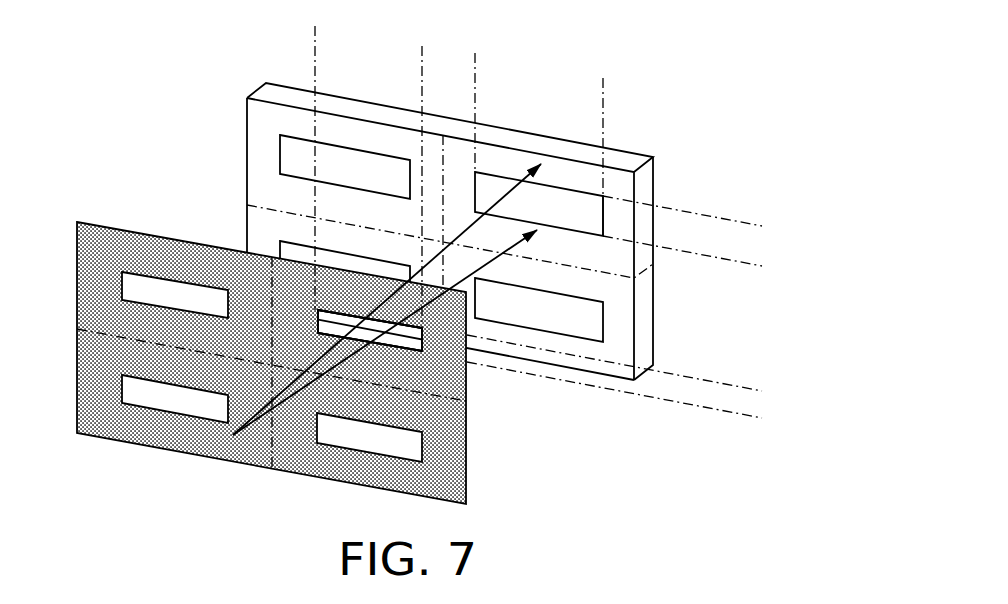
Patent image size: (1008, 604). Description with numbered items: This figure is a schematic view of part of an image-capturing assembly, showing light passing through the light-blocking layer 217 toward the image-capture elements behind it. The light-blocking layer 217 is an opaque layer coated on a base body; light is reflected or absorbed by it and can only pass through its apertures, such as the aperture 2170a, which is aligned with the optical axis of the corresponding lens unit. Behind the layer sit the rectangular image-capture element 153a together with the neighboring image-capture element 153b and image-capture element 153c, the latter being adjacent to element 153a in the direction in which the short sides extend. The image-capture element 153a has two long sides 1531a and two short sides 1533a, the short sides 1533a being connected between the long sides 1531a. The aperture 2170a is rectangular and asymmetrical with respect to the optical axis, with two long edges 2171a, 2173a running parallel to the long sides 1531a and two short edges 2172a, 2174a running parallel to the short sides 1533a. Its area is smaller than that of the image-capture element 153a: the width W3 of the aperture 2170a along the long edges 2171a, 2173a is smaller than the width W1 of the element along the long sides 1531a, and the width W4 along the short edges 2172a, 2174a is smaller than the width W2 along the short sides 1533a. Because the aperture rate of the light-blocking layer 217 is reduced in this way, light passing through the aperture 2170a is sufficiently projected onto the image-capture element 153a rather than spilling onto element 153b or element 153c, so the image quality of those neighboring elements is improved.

The image-capture element 153a is at (562, 205).
The image-capture element 153b is at (380, 172).
The image-capture element 153c is at (582, 317).
The long sides 1531a is at (580, 230).
The short sides 1533a is at (438, 193).
The light-blocking layer 217 is at (440, 480).
The aperture 2170a is at (412, 355).
The long edge 2171a is at (343, 310).
The short edge 2172a is at (423, 351).
The long edge 2173a is at (377, 353).
The short edge 2174a is at (316, 323).
The width of the long sides W1 is at (602, 82).
The width of the short sides W2 is at (758, 227).
The width of the aperture along the long edges W3 is at (421, 50).
The width of the aperture along the short edges W4 is at (758, 392).